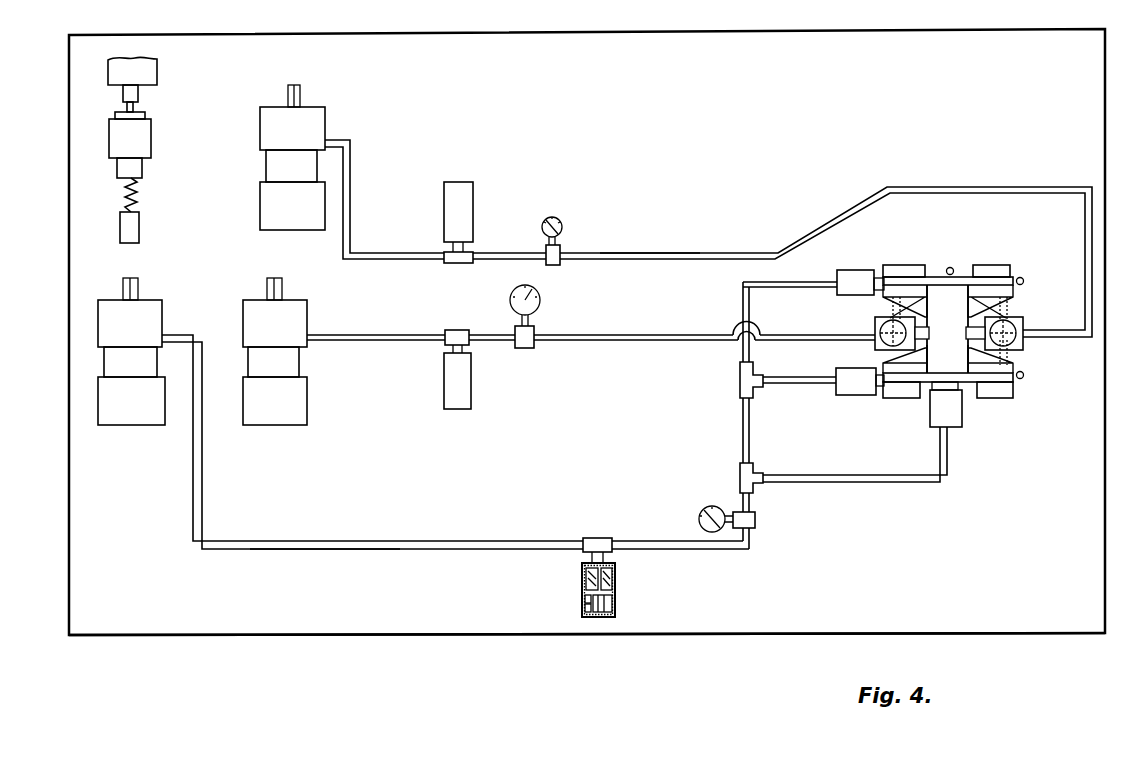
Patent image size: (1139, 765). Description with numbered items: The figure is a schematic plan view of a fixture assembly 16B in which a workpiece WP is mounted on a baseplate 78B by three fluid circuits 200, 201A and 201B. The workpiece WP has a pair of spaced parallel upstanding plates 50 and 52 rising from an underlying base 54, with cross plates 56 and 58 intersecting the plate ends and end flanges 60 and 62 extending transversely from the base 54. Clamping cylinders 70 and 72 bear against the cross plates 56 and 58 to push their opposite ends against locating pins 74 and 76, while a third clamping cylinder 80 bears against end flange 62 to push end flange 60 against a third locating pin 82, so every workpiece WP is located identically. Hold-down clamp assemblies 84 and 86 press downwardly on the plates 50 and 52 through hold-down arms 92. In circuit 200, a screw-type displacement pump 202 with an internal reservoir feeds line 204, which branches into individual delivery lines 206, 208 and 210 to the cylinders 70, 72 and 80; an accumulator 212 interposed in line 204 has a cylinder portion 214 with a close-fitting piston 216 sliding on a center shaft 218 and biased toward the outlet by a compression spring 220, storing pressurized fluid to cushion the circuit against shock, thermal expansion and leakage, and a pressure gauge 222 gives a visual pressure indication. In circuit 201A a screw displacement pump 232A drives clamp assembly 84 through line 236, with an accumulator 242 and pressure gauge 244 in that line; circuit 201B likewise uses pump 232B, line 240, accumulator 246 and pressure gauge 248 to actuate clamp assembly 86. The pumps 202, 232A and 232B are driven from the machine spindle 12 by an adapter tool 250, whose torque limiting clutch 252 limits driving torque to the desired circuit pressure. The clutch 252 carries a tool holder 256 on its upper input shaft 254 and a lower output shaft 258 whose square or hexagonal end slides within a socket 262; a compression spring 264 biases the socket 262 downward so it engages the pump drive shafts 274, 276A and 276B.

The spindle 12 is at (157, 73).
The upper input shaft 254 is at (128, 108).
The tool holder 256 is at (139, 96).
The adapter tool 250 is at (152, 151).
The torque limiting clutch 252 is at (151, 146).
The lower output shaft 258 is at (124, 183).
The compression spring 264 is at (140, 196).
The socket 262 is at (139, 230).
The drive shaft 276B is at (288, 90).
The screw displacement pump 232B is at (293, 228).
The line 240 is at (684, 252).
The fluid circuit 201B is at (676, 189).
The accumulator 246 is at (473, 187).
The pressure gauge 248 is at (562, 224).
The screw-type displacement pump 202 is at (155, 318).
The drive shaft 274 is at (123, 287).
The screw displacement pump 232A is at (294, 418).
The drive shaft 276A is at (270, 280).
The line 236 is at (312, 347).
The fluid circuit 201A is at (518, 378).
The pressure gauge 244 is at (537, 306).
The accumulator 242 is at (460, 411).
The delivery line 206 is at (815, 282).
The delivery line 208 is at (786, 381).
The delivery line 210 is at (790, 484).
The line 204 is at (446, 550).
The fluid circuit 200 is at (333, 563).
The clamping cylinder 70 is at (853, 270).
The clamping cylinder 72 is at (852, 397).
The cross plate 58 is at (1012, 275).
The end flange 60 is at (985, 268).
The locating pin 82 is at (951, 267).
The locating pin 74 is at (1024, 282).
The locating pin 76 is at (1024, 377).
The upstanding plate 52 is at (887, 297).
The upstanding plate 50 is at (1007, 308).
The hold-down arm 92 is at (956, 330).
The base 54 is at (959, 364).
The hold-down clamp assembly 84 is at (877, 342).
The hold-down clamp assembly 86 is at (1026, 342).
The cross plate 56 is at (1005, 388).
The end flange 62 is at (990, 398).
The workpiece WP is at (900, 409).
The clamping cylinder 80 is at (962, 428).
The pressure gauge 222 is at (701, 509).
The accumulator 212 is at (627, 590).
The center shaft 218 is at (615, 575).
The cylinder portion 214 is at (615, 606).
The piston 216 is at (585, 590).
The compression spring 220 is at (584, 607).
The fixture assembly 16B is at (391, 657).
The baseplate 78B is at (704, 637).